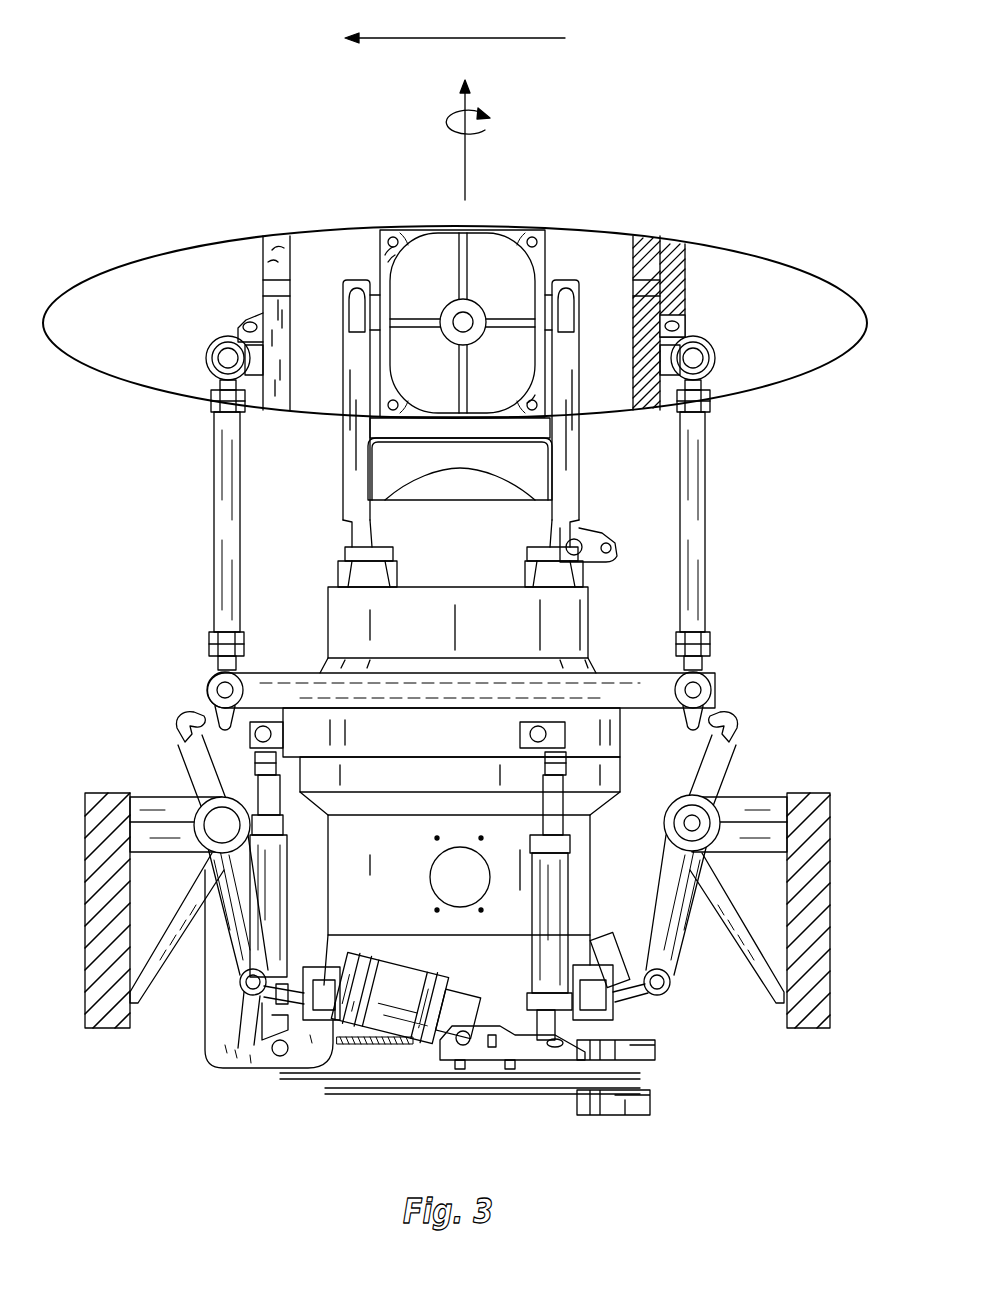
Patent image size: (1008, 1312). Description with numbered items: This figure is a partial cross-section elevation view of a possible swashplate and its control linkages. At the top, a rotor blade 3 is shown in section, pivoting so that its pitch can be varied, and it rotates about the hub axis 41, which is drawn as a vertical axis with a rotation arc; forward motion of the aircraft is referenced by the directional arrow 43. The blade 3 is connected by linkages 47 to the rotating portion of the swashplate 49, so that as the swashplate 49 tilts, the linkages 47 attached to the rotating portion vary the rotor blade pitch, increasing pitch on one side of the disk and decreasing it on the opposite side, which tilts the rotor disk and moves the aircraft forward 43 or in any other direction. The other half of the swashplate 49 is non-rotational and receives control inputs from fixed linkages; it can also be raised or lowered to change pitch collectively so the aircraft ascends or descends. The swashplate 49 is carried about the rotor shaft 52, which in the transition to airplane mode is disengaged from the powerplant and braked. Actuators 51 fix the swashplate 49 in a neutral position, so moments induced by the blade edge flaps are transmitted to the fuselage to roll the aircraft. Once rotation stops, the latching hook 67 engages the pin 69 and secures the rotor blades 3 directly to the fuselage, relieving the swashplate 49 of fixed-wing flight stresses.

The rotor blade 3 is at (775, 262).
The hub axis 41 is at (492, 140).
The directional arrow 43 is at (445, 30).
The linkages 47 is at (222, 568).
The swashplate 49 is at (615, 673).
The actuators 51 is at (262, 778).
The rotor shaft 52 is at (583, 497).
The latching hook 67 is at (178, 718).
The pin 69 is at (206, 686).